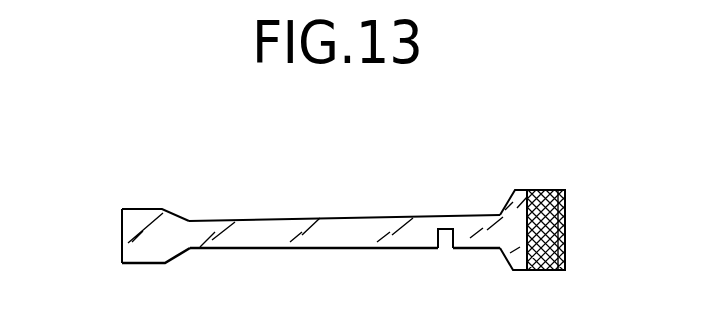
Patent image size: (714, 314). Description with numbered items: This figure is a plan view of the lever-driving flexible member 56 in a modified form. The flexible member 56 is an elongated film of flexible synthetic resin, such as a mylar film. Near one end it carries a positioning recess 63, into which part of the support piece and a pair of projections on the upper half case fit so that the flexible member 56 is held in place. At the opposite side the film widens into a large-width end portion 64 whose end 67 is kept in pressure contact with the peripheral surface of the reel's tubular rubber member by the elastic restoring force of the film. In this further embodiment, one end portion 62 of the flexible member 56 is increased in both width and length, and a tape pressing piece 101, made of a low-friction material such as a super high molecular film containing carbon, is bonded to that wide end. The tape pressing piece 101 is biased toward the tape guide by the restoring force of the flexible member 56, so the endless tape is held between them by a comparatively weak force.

The flexible member 56 is at (348, 233).
The one end portion 62 is at (567, 236).
The positioning recess 63 is at (443, 238).
The large width end portion 64 is at (167, 246).
The end 67 is at (122, 222).
The tape pressing piece 101 is at (547, 207).